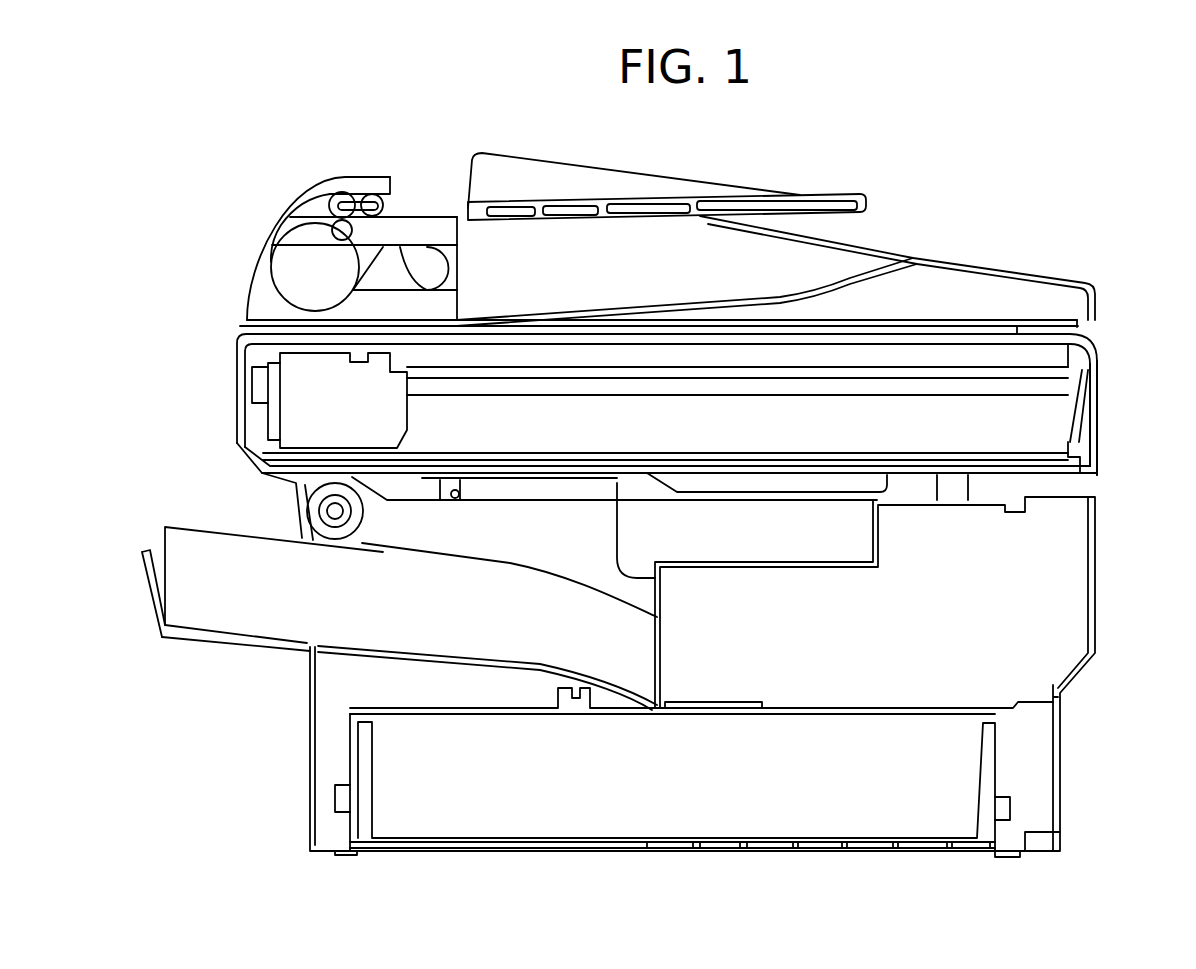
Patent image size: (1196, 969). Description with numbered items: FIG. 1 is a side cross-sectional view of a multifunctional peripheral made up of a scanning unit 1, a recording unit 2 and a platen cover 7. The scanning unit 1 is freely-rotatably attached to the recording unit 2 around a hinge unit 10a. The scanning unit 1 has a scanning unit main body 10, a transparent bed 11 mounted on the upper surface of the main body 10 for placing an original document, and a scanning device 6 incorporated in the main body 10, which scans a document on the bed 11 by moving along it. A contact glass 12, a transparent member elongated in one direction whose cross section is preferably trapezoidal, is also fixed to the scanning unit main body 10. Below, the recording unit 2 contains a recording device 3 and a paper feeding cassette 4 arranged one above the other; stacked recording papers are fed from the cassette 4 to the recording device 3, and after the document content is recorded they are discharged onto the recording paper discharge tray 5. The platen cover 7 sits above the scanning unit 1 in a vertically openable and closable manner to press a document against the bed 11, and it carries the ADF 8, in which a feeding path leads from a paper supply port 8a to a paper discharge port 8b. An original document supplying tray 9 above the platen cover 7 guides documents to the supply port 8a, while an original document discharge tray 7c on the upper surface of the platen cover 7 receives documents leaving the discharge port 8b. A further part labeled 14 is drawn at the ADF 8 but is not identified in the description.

The scanning unit 1 is at (1103, 407).
The recording unit 2 is at (1112, 603).
The recording device 3 is at (903, 657).
The paper feeding cassette 4 is at (688, 815).
The recording paper discharge tray 5 is at (350, 640).
The scanning device 6 is at (347, 437).
The platen cover 7 is at (1068, 276).
The original document discharge tray 7c is at (832, 280).
The ADF 8 is at (257, 218).
The paper supply port 8a is at (392, 210).
The paper discharge port 8b is at (462, 247).
The original document supplying tray 9 is at (653, 202).
The scanning unit main body 10 is at (1097, 355).
The hinge unit 10a is at (370, 512).
The bed 11 is at (1000, 325).
The contact glass 12 is at (317, 357).
The document guide 14 is at (288, 197).